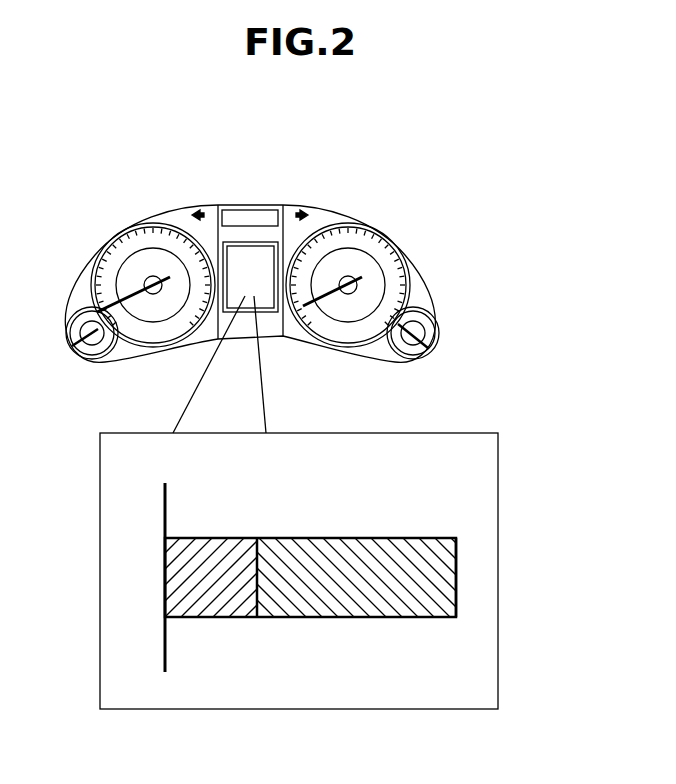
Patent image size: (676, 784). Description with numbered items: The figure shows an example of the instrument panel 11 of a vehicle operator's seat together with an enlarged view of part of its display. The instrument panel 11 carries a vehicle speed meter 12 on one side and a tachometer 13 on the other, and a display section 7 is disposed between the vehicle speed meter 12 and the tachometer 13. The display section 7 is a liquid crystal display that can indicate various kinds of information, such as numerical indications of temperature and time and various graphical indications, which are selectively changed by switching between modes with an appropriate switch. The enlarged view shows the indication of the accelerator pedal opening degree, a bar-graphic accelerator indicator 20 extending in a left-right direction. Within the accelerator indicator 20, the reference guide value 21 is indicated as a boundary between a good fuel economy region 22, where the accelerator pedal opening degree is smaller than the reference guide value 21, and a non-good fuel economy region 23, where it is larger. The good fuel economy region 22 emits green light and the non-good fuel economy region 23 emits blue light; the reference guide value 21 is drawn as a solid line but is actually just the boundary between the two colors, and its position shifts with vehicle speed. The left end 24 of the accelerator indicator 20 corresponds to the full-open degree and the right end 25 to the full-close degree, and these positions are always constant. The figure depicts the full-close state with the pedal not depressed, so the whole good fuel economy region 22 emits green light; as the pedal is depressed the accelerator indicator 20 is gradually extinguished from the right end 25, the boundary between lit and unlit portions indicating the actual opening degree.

The display section 7 is at (250, 262).
The instrument panel 11 is at (318, 193).
The vehicle speed meter 12 is at (128, 252).
The tachometer 13 is at (377, 260).
The accelerator indicator 20 is at (324, 569).
The reference guide value 21 is at (260, 566).
The good fuel economy region 22 is at (390, 600).
The non-good fuel economy region 23 is at (222, 602).
The left end 24 is at (165, 568).
The right end 25 is at (456, 568).